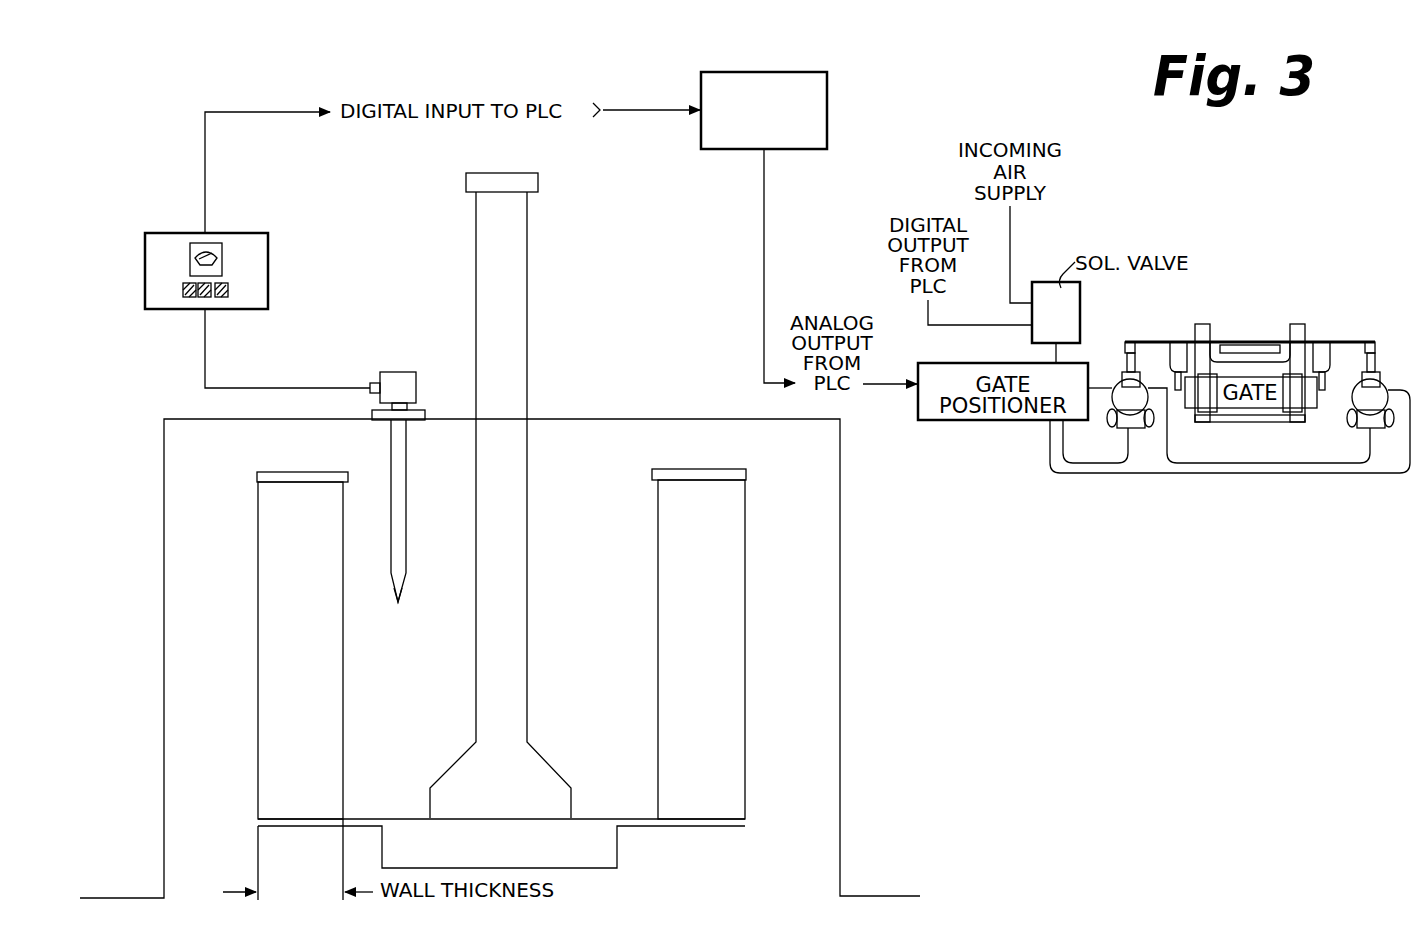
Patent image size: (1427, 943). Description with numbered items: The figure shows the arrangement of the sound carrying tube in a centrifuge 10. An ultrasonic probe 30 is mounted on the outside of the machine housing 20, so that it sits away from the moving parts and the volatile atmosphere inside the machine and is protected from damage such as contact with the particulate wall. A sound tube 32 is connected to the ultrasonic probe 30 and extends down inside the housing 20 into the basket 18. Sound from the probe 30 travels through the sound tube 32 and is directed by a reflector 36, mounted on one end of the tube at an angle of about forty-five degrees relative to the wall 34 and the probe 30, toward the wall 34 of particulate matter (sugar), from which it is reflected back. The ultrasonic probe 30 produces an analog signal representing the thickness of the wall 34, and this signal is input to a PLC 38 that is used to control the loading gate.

The centrifuge 10 is at (82, 466).
The basket 18 is at (745, 558).
The machine housing 20 is at (840, 672).
The ultrasonic probe 30 is at (400, 372).
The sound tube 32 is at (406, 527).
The wall 34 is at (286, 645).
The reflector 36 is at (400, 605).
The PLC 38 is at (828, 110).